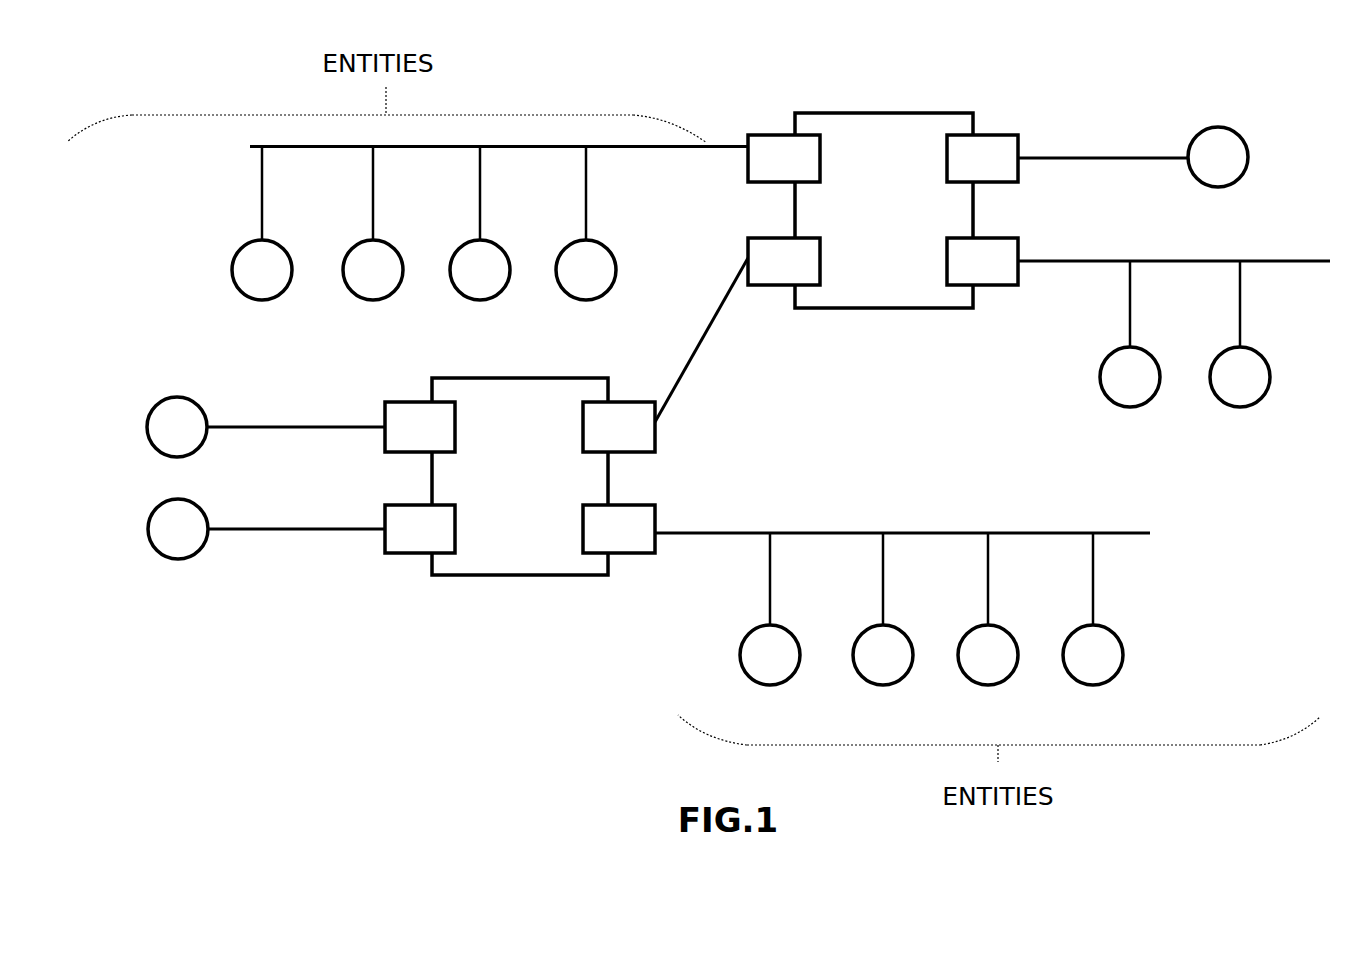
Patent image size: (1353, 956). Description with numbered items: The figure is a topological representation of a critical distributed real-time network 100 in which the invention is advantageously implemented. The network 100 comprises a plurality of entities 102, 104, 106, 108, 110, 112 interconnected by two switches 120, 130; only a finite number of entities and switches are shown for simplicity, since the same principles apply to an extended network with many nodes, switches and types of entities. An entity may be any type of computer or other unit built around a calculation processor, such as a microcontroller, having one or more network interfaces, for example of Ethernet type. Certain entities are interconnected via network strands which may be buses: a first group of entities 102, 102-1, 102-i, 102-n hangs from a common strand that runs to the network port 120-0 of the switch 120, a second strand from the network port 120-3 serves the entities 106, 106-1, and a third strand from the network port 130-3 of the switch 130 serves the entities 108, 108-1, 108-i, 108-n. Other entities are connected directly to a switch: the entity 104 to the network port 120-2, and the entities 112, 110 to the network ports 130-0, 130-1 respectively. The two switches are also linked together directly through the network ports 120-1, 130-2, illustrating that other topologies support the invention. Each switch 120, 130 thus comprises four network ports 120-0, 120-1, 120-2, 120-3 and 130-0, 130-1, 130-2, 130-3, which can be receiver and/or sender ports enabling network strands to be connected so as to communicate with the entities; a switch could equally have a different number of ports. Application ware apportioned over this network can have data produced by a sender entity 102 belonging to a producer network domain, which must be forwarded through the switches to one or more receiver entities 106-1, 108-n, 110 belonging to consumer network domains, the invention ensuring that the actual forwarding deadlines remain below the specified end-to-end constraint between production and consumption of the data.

The critical distributed real-time network 100 is at (445, 687).
The entity 102 is at (227, 262).
The entity 102-1 is at (347, 252).
The entity 102-i is at (452, 252).
The entity 102-n is at (557, 252).
The entity 104 is at (1213, 122).
The entity 106 is at (1107, 400).
The entity 106-1 is at (1218, 400).
The entity 108 is at (747, 677).
The entity 108-1 is at (863, 677).
The entity 108-i is at (968, 677).
The entity 108-n is at (1070, 678).
The entity 110 is at (163, 557).
The entity 112 is at (145, 402).
The switch 120 is at (883, 210).
The network port 120-0 is at (784, 158).
The network port 120-1 is at (784, 261).
The network port 120-2 is at (982, 158).
The network port 120-3 is at (982, 261).
The switch 130 is at (520, 476).
The network port 130-0 is at (420, 427).
The network port 130-1 is at (420, 529).
The network port 130-2 is at (619, 427).
The network port 130-3 is at (619, 529).